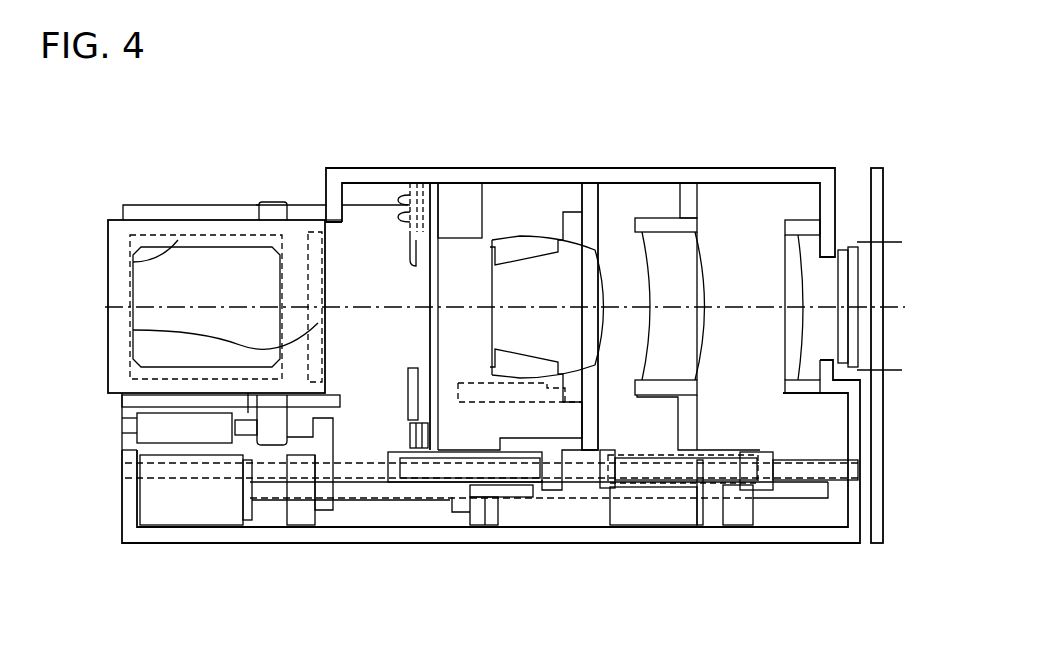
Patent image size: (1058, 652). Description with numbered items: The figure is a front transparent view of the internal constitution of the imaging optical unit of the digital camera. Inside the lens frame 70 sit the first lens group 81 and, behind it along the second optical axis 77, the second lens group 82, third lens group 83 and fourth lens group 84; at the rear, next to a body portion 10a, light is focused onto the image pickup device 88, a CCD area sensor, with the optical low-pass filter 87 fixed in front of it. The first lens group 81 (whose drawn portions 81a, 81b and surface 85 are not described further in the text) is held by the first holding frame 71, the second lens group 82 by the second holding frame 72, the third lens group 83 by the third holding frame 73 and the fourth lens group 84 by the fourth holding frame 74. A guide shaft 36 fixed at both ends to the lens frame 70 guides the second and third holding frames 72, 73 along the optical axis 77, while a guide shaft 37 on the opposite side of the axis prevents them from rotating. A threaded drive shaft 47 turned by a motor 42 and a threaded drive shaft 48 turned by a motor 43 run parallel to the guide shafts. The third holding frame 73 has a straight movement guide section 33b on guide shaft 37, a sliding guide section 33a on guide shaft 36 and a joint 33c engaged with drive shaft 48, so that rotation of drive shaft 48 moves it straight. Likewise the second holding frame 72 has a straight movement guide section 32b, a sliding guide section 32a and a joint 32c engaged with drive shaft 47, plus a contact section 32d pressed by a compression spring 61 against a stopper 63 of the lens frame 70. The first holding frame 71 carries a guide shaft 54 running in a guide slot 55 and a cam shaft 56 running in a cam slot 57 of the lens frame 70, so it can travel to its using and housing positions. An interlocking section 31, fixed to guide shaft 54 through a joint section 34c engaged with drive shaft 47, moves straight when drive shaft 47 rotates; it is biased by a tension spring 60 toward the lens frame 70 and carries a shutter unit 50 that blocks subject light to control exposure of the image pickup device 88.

The camera body wall 10a is at (877, 537).
The interlocking section 31 is at (327, 445).
The sliding guide section 32a is at (550, 487).
The straight movement guide section 32b is at (590, 195).
The joint 32c is at (492, 518).
The contact section 32d is at (458, 513).
The sliding guide section 33a is at (750, 452).
The straight movement guide section 33b is at (687, 192).
The joint 33c is at (748, 518).
The joint section 34c is at (292, 515).
The guide shaft 36 is at (353, 470).
The guide shaft 37 is at (375, 197).
The motor 42 is at (200, 515).
The motor 43 is at (663, 518).
The drive shaft 47 is at (358, 495).
The drive shaft 48 is at (810, 497).
The shutter unit 50 is at (394, 244).
The guide shaft 54 is at (275, 430).
The guide slot 55 is at (305, 400).
The cam shaft 56 is at (280, 204).
The cam slot 57 is at (257, 206).
The tension spring 60 is at (145, 437).
The compression spring 61 is at (483, 380).
The stopper 63 is at (478, 518).
The lens frame 70 is at (417, 533).
The first holding frame 71 is at (125, 205).
The second holding frame 72 is at (527, 248).
The third holding frame 73 is at (662, 222).
The fourth holding frame 74 is at (795, 228).
The optical axis 77 is at (355, 306).
The first lens group 81 is at (42, 245).
The prism incident surface 81a is at (160, 300).
The prism exit surface 81b is at (133, 327).
The second lens group 82 is at (498, 295).
The third lens group 83 is at (688, 265).
The fourth lens group 84 is at (788, 333).
The reflecting surface 85 is at (133, 255).
The optical low-pass filter 87 is at (840, 338).
The image pickup device 88 is at (848, 255).